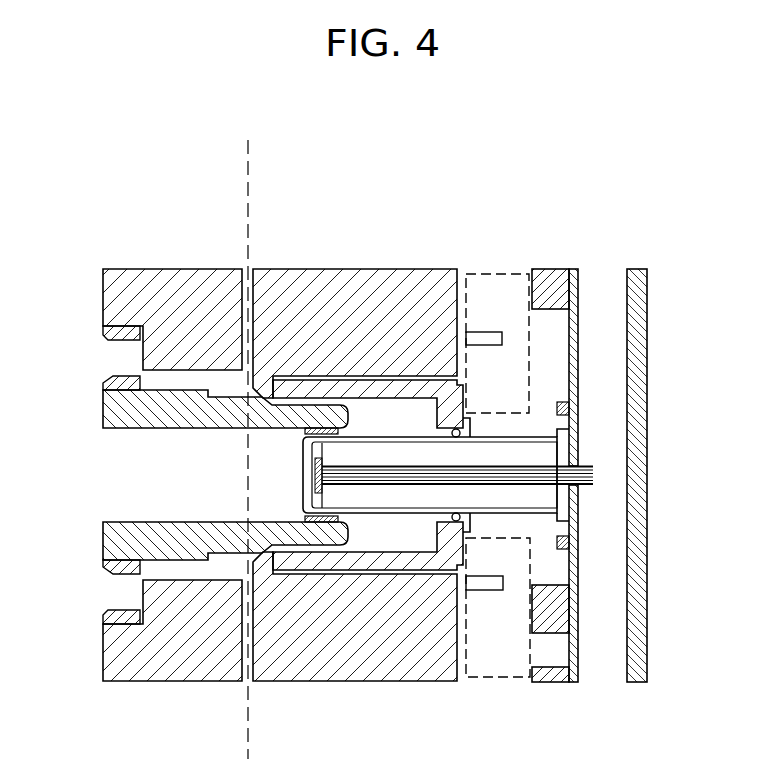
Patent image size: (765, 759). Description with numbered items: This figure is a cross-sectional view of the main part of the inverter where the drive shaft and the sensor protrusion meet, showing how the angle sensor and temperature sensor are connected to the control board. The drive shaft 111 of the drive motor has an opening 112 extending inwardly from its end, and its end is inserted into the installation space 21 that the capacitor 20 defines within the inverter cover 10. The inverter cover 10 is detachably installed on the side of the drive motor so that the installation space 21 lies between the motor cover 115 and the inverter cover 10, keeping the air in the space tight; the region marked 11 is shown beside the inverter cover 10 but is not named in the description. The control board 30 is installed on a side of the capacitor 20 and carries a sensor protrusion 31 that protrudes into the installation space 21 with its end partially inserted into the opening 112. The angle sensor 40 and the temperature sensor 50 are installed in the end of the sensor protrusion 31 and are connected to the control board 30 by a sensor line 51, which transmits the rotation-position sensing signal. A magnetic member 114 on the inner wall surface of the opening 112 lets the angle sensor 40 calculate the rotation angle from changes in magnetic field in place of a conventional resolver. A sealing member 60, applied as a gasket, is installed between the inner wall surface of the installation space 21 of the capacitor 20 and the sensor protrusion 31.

The inverter cover 10 is at (640, 520).
The through hole 11 is at (602, 559).
The capacitor 20 is at (321, 283).
The installation space 21 is at (407, 416).
The control board 30 is at (574, 645).
The sensor protrusion 31 is at (428, 523).
The angle sensor 40 is at (318, 456).
The temperature sensor 50 is at (322, 480).
The sensor line 51 is at (537, 466).
The sealing member 60 is at (453, 430).
The drive shaft 111 is at (130, 409).
The opening 112 is at (268, 486).
The magnetic member 114 is at (316, 436).
The motor cover 115 is at (175, 285).